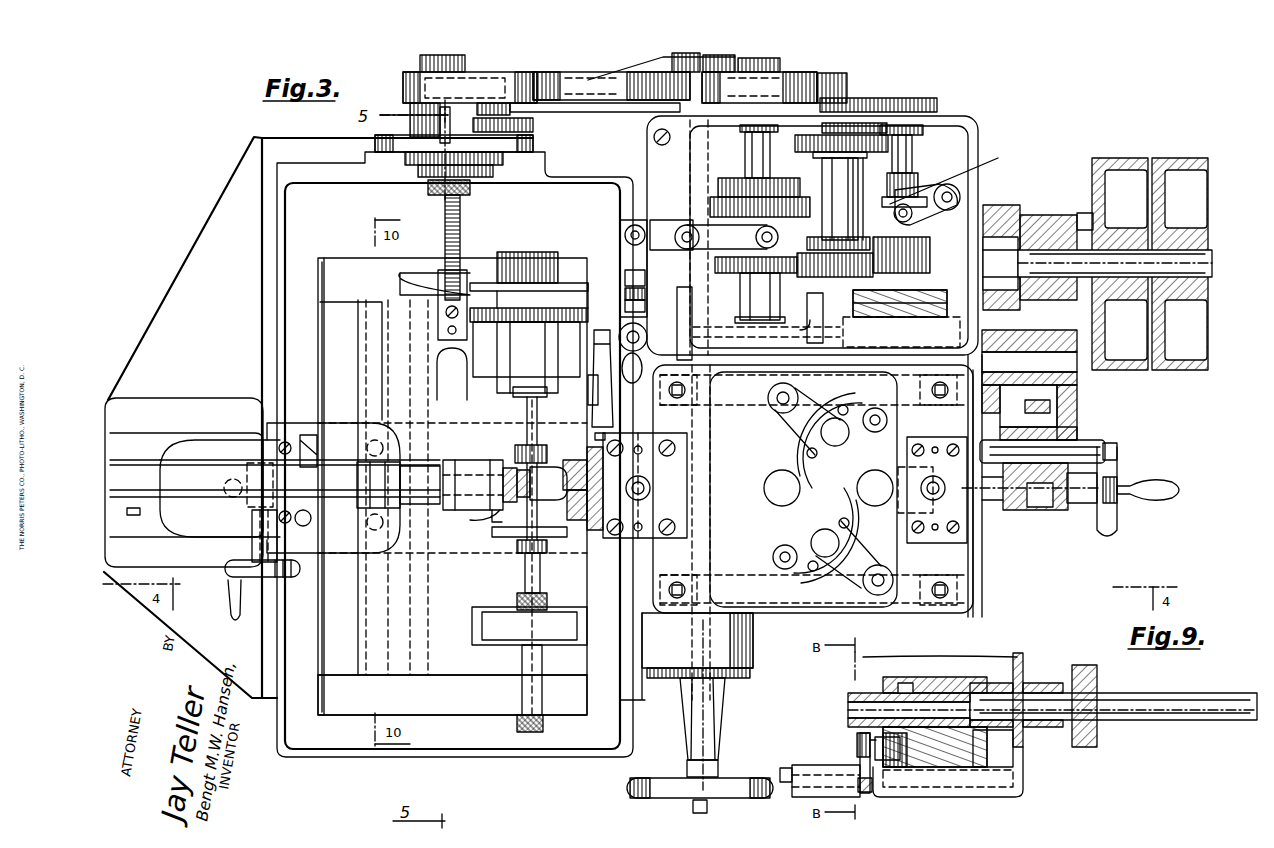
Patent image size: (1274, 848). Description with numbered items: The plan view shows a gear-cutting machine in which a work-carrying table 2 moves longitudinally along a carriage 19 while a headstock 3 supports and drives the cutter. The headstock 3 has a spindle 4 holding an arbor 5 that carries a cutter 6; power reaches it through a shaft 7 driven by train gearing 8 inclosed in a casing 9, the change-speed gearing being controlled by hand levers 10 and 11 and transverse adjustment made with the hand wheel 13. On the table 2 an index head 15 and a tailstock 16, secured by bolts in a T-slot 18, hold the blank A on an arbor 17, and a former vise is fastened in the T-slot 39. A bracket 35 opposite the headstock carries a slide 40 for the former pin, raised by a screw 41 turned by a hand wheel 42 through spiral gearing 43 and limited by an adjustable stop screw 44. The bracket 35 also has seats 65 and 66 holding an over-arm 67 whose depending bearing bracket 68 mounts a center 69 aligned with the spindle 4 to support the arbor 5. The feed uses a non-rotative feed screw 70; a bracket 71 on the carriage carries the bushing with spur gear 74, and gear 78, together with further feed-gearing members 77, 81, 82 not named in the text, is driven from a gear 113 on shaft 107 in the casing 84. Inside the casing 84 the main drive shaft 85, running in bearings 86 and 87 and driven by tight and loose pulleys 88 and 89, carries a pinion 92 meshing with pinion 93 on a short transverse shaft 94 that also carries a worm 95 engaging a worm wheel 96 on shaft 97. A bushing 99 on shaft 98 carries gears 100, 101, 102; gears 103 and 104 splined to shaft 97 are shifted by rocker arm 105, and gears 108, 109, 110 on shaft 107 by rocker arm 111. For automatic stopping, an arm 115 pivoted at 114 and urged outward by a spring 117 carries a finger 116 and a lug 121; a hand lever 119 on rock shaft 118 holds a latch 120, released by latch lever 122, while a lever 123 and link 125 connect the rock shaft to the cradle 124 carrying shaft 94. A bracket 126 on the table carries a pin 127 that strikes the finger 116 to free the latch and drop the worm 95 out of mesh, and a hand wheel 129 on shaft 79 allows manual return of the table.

In FIG. 3, the work-carrying table 2 is at (342, 640).
In FIG. 3, the headstock 3 is at (792, 527).
In FIG. 3, the spindle 4 is at (590, 477).
In FIG. 3, the arbor 5 is at (590, 508).
In FIG. 3, the cutter 6 is at (535, 478).
In FIG. 3, the shaft 7 is at (1083, 445).
In FIG. 3, the train gearing 8 is at (1043, 405).
In FIG. 9, the train gearing 8 is at (1085, 748).
In FIG. 3, the casing 9 is at (1032, 510).
In FIG. 3, the hand lever 10 is at (838, 540).
In FIG. 3, the hand lever 11 is at (845, 435).
In FIG. 3, the hand wheel 13 is at (1110, 527).
In FIG. 3, the index head 15 is at (545, 250).
In FIG. 3, the tailstock 16 is at (545, 715).
In FIG. 3, the arbor 17 is at (540, 575).
In FIG. 3, the T-slot 18 is at (520, 568).
In FIG. 3, the carriage 19 is at (372, 705).
In FIG. 3, the bracket 35 is at (197, 445).
In FIG. 3, the longitudinal T-slot 39 is at (376, 663).
In FIG. 3, the slide 40 is at (307, 440).
In FIG. 3, the screw 41 is at (315, 463).
In FIG. 3, the hand wheel 42 is at (248, 597).
In FIG. 3, the spiral gearing 43 is at (235, 502).
In FIG. 3, the adjustable screw 44 is at (312, 537).
In FIG. 3, the seat 65 is at (123, 465).
In FIG. 3, the seat 66 is at (385, 460).
In FIG. 3, the over-arm 67 is at (200, 480).
In FIG. 3, the bearing bracket 68 is at (478, 463).
In FIG. 3, the center 69 is at (510, 470).
In FIG. 3, the feed screw 70 is at (463, 213).
In FIG. 3, the bracket 71 is at (395, 147).
In FIG. 3, the spur gear 74 is at (410, 78).
In FIG. 3, the gear 77 is at (543, 103).
In FIG. 3, the gear 78 is at (590, 73).
In FIG. 3, the shaft 79 is at (703, 748).
In FIG. 3, the shaft 81 is at (597, 102).
In FIG. 3, the gear 82 is at (533, 125).
In FIG. 3, the casing 84 is at (972, 116).
In FIG. 3, the main drive shaft 85 is at (1197, 260).
In FIG. 9, the main drive shaft 85 is at (1165, 702).
In FIG. 3, the bearing 86 is at (993, 250).
In FIG. 3, the bearing 87 is at (1085, 215).
In FIG. 3, the tight belt pulley 88 is at (1178, 157).
In FIG. 3, the loose belt pulley 89 is at (1117, 157).
In FIG. 9, the pinion 92 is at (907, 687).
In FIG. 3, the pinion 93 is at (870, 318).
In FIG. 9, the pinion 93 is at (912, 767).
In FIG. 9, the transverse shaft 94 is at (980, 748).
In FIG. 3, the worm 95 is at (907, 318).
In FIG. 9, the worm 95 is at (960, 767).
In FIG. 3, the worm wheel 96 is at (940, 327).
In FIG. 3, the longitudinal shaft 97 is at (912, 150).
In FIG. 3, the shaft 98 is at (822, 128).
In FIG. 3, the bushing 99 is at (830, 172).
In FIG. 3, the gear 100 is at (870, 135).
In FIG. 3, the gear 101 is at (827, 237).
In FIG. 3, the gear 102 is at (803, 278).
In FIG. 3, the gear 103 is at (917, 175).
In FIG. 3, the gear 104 is at (920, 228).
In FIG. 3, the rocker arm 105 is at (959, 173).
In FIG. 3, the longitudinal shaft 107 is at (745, 137).
In FIG. 3, the gear 108 is at (740, 180).
In FIG. 3, the gear 109 is at (712, 205).
In FIG. 3, the gear 110 is at (728, 273).
In FIG. 3, the rocker arm 111 is at (713, 250).
In FIG. 3, the gear 113 is at (777, 78).
In FIG. 3, the pivot 114 is at (626, 236).
In FIG. 3, the arm 115 is at (627, 258).
In FIG. 3, the finger 116 is at (625, 294).
In FIG. 3, the spring 117 is at (672, 268).
In FIG. 3, the rock shaft 118 is at (718, 330).
In FIG. 9, the rock shaft 118 is at (790, 765).
In FIG. 3, the hand lever 119 is at (655, 380).
In FIG. 3, the latch 120 is at (625, 306).
In FIG. 3, the lug 121 is at (625, 280).
In FIG. 3, the latch lever 122 is at (612, 405).
In FIG. 3, the lever 123 is at (810, 313).
In FIG. 9, the lever 123 is at (860, 760).
In FIG. 3, the cradle 124 is at (862, 227).
In FIG. 9, the cradle 124 is at (980, 680).
In FIG. 3, the link 125 is at (800, 330).
In FIG. 9, the link 125 is at (857, 737).
In FIG. 3, the bracket 126 is at (597, 388).
In FIG. 3, the pin 127 is at (600, 402).
In FIG. 3, the hand wheel 129 is at (740, 792).
In FIG. 3, the blank A is at (498, 522).